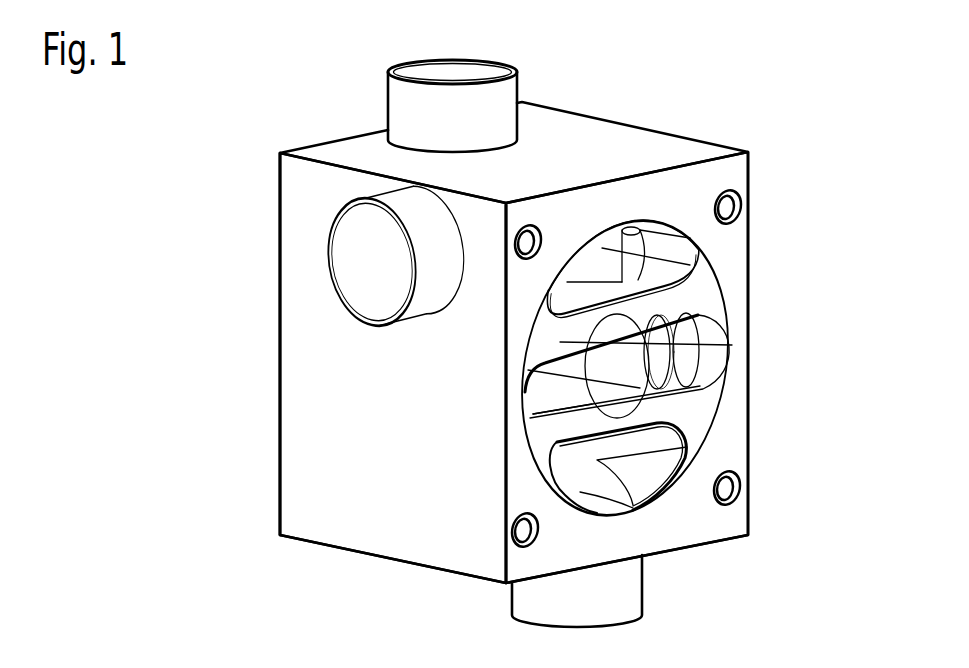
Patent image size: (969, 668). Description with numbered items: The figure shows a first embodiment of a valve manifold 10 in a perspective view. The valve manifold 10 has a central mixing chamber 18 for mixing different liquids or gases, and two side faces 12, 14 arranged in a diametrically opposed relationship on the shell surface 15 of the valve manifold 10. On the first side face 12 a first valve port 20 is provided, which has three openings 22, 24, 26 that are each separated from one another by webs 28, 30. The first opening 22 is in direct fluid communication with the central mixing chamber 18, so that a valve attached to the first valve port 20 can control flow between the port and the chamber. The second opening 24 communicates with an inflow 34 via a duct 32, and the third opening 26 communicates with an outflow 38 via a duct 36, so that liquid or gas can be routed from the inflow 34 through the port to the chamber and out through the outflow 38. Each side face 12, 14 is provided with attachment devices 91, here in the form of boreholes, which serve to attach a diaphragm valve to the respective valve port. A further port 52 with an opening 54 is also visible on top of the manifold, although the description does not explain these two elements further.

The valve manifold 10 is at (740, 66).
The first side face 12 is at (693, 200).
The second side face 14 is at (276, 293).
The shell surface 15 is at (300, 355).
The central mixing chamber 18 is at (547, 363).
The first valve port 20 is at (703, 412).
The first opening 22 is at (708, 339).
The second opening 24 is at (653, 242).
The third opening 26 is at (660, 470).
The web 28 is at (645, 308).
The web 30 is at (592, 425).
The duct 32 is at (602, 257).
The inflow 34 is at (355, 237).
The duct 36 is at (623, 503).
The outflow 38 is at (582, 602).
The top inlet port 52 is at (412, 112).
The inlet opening 54 is at (444, 72).
The attachment devices 91 is at (737, 493).